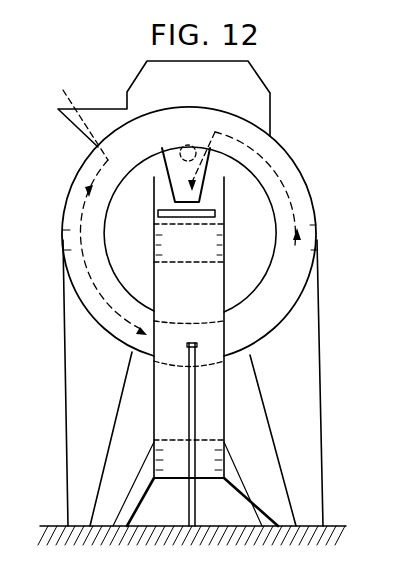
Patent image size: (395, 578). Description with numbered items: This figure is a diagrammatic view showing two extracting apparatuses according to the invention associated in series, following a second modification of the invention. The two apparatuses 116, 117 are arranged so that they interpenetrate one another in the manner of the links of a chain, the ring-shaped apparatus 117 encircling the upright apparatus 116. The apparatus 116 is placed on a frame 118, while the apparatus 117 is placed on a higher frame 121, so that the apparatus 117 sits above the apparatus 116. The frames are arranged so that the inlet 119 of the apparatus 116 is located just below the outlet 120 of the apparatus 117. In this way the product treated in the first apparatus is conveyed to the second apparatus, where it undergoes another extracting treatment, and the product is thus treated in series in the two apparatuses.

The apparatus 116 is at (229, 383).
The apparatus 117 is at (316, 200).
The frame 118 is at (142, 478).
The inlet 119 is at (212, 203).
The outlet 120 is at (158, 172).
The frame 121 is at (306, 470).